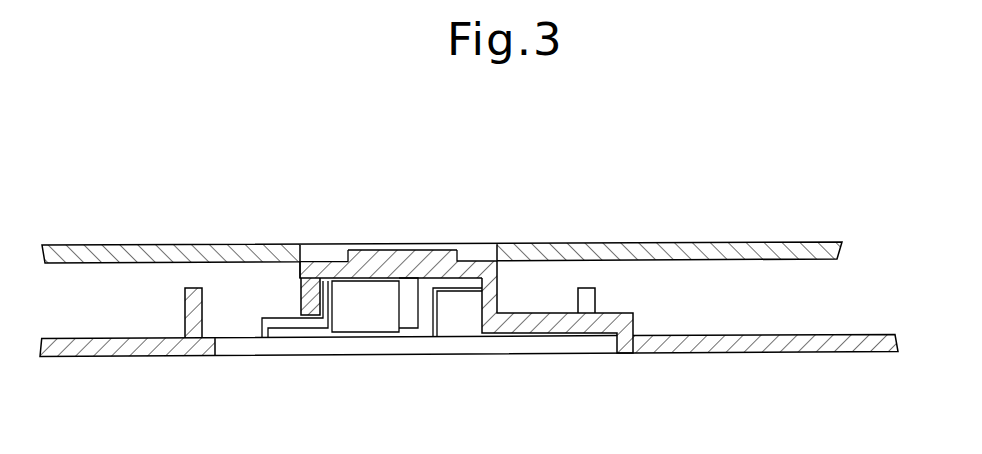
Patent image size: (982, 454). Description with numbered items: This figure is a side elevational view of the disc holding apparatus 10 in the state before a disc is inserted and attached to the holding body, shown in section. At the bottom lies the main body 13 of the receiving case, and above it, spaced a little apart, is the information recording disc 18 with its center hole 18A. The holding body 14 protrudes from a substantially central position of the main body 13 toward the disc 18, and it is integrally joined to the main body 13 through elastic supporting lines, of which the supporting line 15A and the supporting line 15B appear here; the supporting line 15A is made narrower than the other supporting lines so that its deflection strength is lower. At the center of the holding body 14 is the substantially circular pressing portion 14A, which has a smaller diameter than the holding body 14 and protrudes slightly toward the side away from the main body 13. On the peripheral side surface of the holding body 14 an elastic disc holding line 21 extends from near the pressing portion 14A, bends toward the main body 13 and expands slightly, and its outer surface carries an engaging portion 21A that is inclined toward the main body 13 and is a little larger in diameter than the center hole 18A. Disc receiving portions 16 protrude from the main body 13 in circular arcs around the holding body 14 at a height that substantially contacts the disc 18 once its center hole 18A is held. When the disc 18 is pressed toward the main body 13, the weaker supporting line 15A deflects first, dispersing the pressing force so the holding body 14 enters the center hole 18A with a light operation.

The connector assembly 10 is at (345, 206).
The main body 13 is at (729, 353).
The holding body 14 is at (417, 240).
The pressing portion 14A is at (362, 245).
The supporting line 15A is at (546, 312).
The supporting line 15B is at (292, 330).
The disc receiving portion 16 is at (185, 304).
The information recording disc 18 is at (808, 242).
The center hole 18A is at (496, 256).
The disc holding line 21 is at (301, 295).
The engaging portion 21A is at (302, 282).